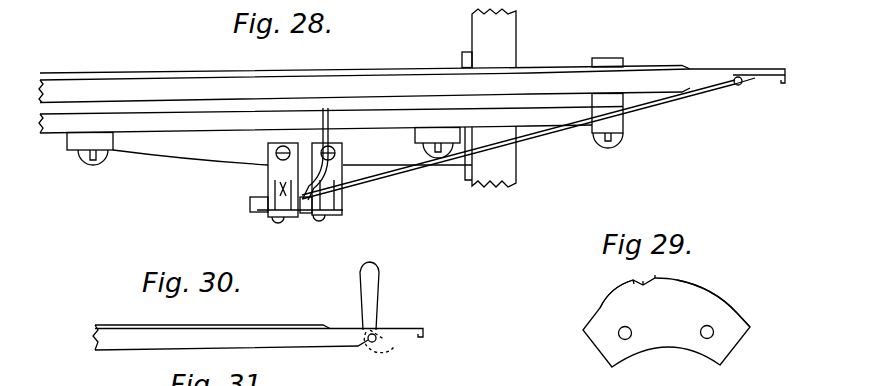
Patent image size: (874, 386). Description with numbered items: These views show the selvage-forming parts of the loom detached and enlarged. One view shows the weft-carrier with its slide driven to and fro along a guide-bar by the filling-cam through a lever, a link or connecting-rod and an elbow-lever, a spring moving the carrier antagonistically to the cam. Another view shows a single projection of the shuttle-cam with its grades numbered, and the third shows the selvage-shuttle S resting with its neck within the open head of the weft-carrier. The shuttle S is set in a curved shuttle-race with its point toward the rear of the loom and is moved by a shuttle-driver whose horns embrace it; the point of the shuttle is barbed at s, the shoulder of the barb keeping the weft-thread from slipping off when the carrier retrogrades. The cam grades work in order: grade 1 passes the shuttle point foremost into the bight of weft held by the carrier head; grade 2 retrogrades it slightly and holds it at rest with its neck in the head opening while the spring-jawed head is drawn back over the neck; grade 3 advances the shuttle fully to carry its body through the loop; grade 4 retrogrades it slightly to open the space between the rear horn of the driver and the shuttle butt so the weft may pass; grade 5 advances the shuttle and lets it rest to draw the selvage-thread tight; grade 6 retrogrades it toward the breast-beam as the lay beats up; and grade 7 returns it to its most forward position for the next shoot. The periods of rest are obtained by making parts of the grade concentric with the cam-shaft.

In FIG. 28, the first grade of shuttle-cam projection 1 is at (364, 98).
In FIG. 30, the first grade of shuttle-cam projection 1 is at (230, 337).
In FIG. 29, the first grade of shuttle-cam projection 1 is at (600, 310).
In FIG. 28, the second grade of shuttle-cam projection 2 is at (766, 68).
In FIG. 30, the second grade of shuttle-cam projection 2 is at (354, 328).
In FIG. 29, the second grade of shuttle-cam projection 2 is at (618, 298).
In FIG. 28, the fourth grade of shuttle-cam projection 4 is at (307, 154).
In FIG. 29, the fourth grade of shuttle-cam projection 4 is at (642, 275).
In FIG. 29, the third grade of shuttle-cam projection 3 is at (630, 274).
In FIG. 29, the fifth grade of shuttle-cam projection 5 is at (656, 269).
In FIG. 29, the sixth grade of shuttle-cam projection 6 is at (707, 291).
In FIG. 29, the seventh grade of shuttle-cam projection 7 is at (745, 306).
In FIG. 30, the selvage-shuttle S is at (378, 292).
In FIG. 30, the barb s is at (383, 344).